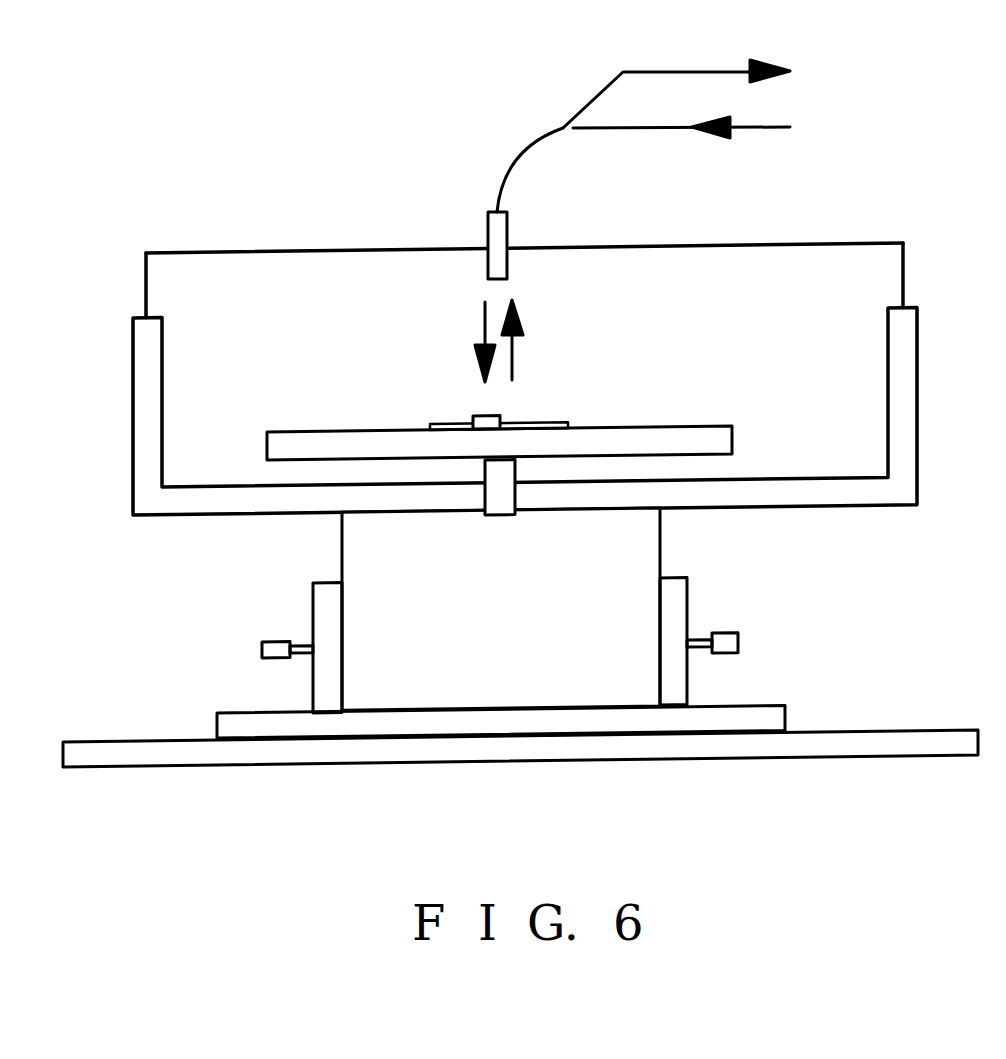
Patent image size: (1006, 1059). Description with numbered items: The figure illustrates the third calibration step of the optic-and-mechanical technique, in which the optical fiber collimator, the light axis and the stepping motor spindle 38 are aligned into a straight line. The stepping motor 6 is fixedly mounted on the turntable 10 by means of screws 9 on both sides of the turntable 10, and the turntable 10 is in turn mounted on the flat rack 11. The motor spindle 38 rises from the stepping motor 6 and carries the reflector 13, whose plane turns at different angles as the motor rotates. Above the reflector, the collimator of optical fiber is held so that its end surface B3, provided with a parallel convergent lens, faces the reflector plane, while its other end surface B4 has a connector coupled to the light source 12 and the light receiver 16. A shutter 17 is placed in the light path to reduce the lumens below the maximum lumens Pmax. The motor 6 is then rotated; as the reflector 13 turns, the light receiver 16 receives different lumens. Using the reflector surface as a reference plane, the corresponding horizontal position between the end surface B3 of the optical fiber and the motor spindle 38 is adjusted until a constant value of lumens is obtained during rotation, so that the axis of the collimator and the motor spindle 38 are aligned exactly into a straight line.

The light receiver 16 is at (580, 115).
The light source 12 is at (573, 131).
The end surface B4 is at (497, 211).
The end surface B3 is at (493, 283).
The shutter 17 is at (474, 417).
The reflector 13 is at (558, 421).
The stepping motor spindle 38 is at (500, 500).
The stepping motor 6 is at (661, 552).
The screws 9 is at (739, 643).
The turntable 10 is at (781, 720).
The flat rack 11 is at (195, 762).